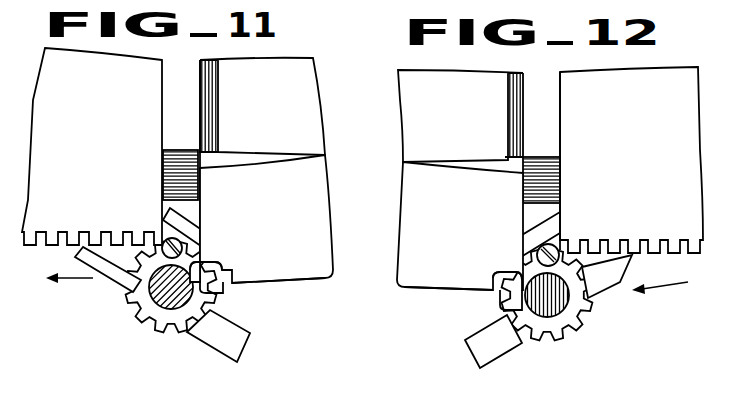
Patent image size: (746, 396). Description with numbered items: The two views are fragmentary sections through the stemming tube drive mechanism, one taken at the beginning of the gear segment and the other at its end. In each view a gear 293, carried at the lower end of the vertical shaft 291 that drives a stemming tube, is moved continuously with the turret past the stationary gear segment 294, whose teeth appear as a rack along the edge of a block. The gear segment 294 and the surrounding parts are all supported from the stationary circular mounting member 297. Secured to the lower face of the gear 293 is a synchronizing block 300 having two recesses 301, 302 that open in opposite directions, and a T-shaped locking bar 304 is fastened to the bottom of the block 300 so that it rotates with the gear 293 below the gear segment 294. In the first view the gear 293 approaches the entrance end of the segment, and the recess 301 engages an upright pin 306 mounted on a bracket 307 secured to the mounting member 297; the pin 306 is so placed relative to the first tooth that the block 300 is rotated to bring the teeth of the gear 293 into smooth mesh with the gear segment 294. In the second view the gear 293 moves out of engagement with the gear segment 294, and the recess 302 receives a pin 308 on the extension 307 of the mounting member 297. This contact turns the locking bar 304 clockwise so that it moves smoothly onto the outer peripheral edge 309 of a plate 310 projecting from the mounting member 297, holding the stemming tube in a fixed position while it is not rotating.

In FIG. 11, the vertical shaft 291 is at (158, 296).
In FIG. 12, the vertical shaft 291 is at (580, 312).
In FIG. 11, the gear 293 is at (142, 315).
In FIG. 12, the gear 293 is at (560, 335).
In FIG. 11, the gear segment 294 is at (107, 181).
In FIG. 12, the gear segment 294 is at (657, 174).
In FIG. 11, the stationary circular mounting member 297 is at (305, 91).
In FIG. 12, the stationary circular mounting member 297 is at (421, 115).
In FIG. 11, the synchronizing block 300 is at (221, 291).
In FIG. 12, the synchronizing block 300 is at (553, 228).
In FIG. 11, the recess 301 is at (162, 233).
In FIG. 12, the recess 301 is at (495, 277).
In FIG. 11, the recess 302 is at (221, 266).
In FIG. 12, the recess 302 is at (558, 238).
In FIG. 11, the T-shaped locking bar 304 is at (220, 343).
In FIG. 12, the T-shaped locking bar 304 is at (492, 353).
In FIG. 11, the pin 306 is at (190, 235).
In FIG. 11, the bracket 307 is at (187, 211).
In FIG. 12, the bracket 307 is at (545, 210).
In FIG. 12, the pin 308 is at (560, 250).
In FIG. 11, the outer peripheral edge 309 is at (287, 283).
In FIG. 12, the outer peripheral edge 309 is at (437, 287).
In FIG. 11, the plate 310 is at (313, 237).
In FIG. 12, the plate 310 is at (452, 224).